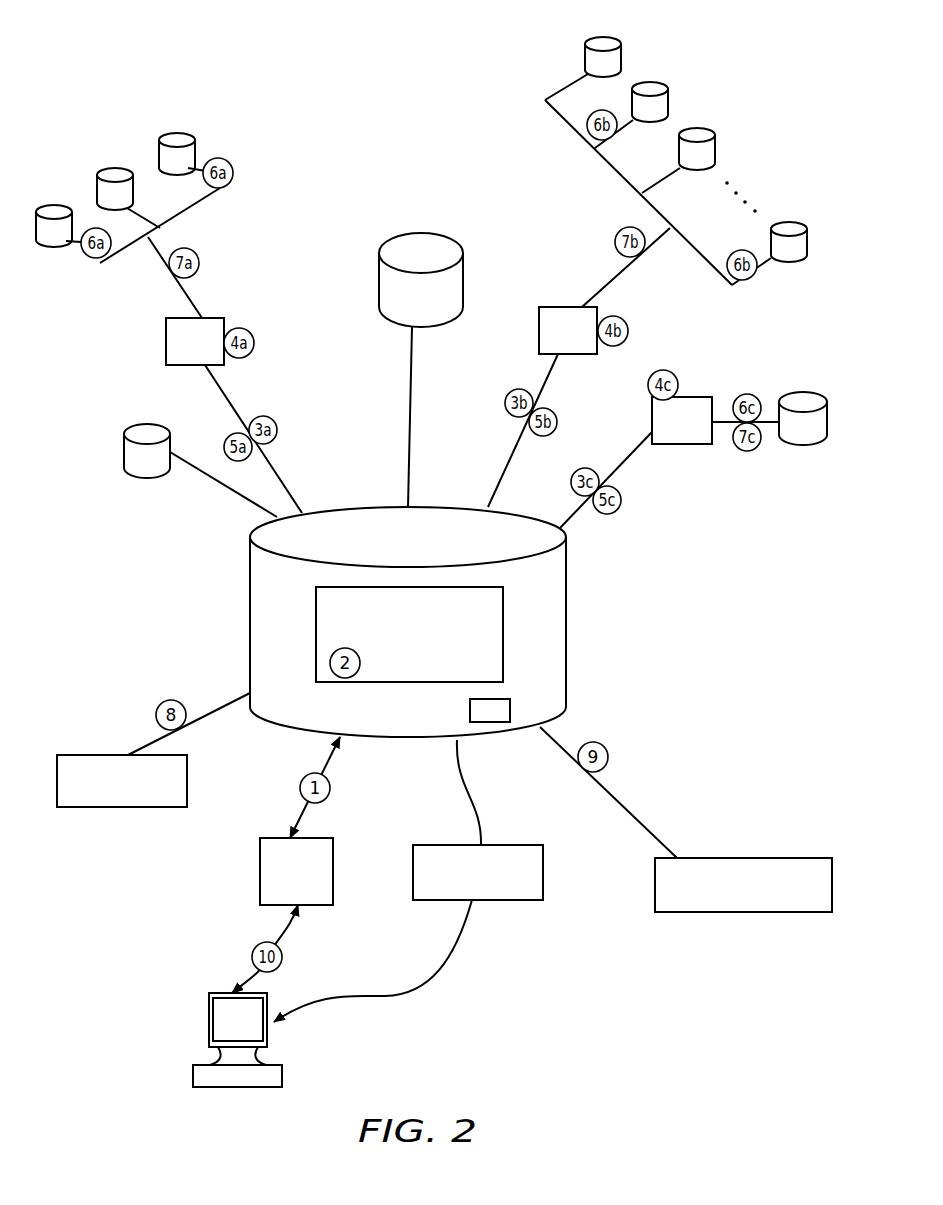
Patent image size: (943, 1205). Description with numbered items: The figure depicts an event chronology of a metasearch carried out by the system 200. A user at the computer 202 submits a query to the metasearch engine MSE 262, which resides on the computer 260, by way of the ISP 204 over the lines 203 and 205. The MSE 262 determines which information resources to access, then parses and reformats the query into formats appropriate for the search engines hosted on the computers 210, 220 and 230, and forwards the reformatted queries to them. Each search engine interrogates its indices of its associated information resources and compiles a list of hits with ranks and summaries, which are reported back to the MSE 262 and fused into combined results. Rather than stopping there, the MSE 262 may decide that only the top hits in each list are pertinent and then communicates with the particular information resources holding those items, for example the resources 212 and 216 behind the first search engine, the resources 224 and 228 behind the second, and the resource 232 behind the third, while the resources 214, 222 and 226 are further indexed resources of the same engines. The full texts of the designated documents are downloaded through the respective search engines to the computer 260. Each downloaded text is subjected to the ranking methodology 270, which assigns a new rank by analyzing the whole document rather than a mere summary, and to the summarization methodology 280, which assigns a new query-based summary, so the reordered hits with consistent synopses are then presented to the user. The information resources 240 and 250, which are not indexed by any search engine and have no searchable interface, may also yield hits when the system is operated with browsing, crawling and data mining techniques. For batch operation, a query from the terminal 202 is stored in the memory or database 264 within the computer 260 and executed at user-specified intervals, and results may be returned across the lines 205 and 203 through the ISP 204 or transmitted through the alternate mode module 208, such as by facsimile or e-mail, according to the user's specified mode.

The system 200 is at (708, 645).
The computer 202 is at (208, 1018).
The line 203 is at (288, 937).
The ISP 204 is at (260, 882).
The line 205 is at (328, 765).
The alternate mode module 208 is at (493, 900).
The computer with search engine 210 is at (166, 336).
The information resource 212 is at (62, 203).
The information resource 214 is at (122, 167).
The information resource 216 is at (185, 133).
The computer with search engine 220 is at (552, 307).
The information resource 222 is at (624, 55).
The information resource 224 is at (672, 102).
The information resource 226 is at (717, 149).
The information resource 228 is at (808, 240).
The computer with search engine 230 is at (683, 397).
The information resource 232 is at (812, 447).
The information resource 240 is at (138, 425).
The information resource 250 is at (463, 270).
The computer 260 is at (250, 603).
The MSE 262 is at (503, 600).
The memory or database 264 is at (505, 697).
The ranking methodology 270 is at (100, 753).
The summarization methodology 280 is at (742, 912).